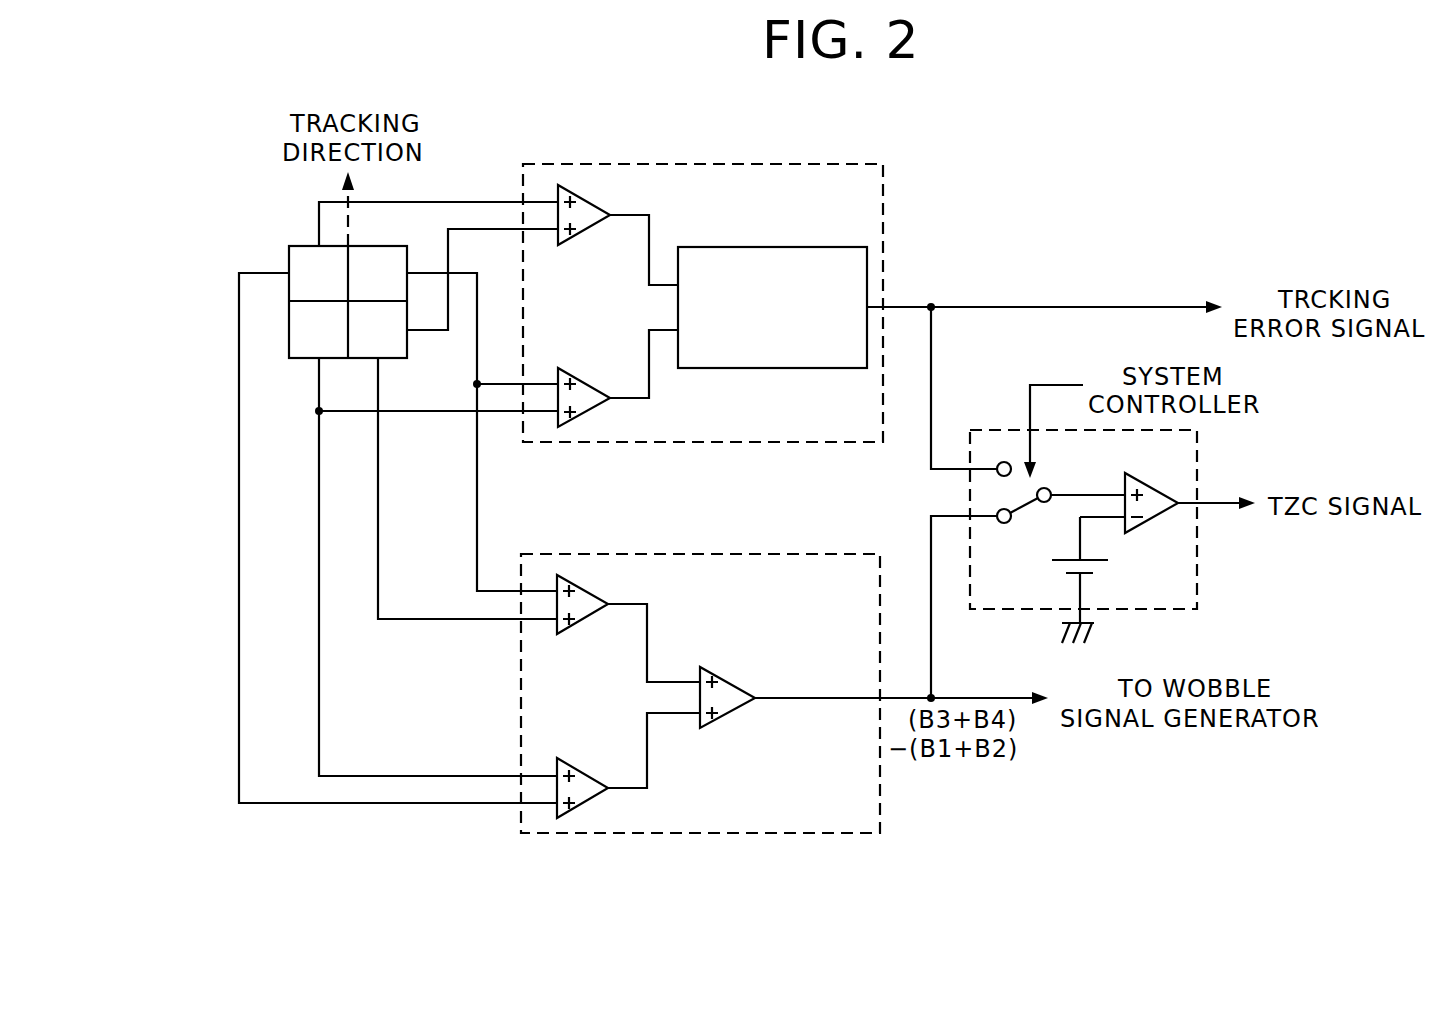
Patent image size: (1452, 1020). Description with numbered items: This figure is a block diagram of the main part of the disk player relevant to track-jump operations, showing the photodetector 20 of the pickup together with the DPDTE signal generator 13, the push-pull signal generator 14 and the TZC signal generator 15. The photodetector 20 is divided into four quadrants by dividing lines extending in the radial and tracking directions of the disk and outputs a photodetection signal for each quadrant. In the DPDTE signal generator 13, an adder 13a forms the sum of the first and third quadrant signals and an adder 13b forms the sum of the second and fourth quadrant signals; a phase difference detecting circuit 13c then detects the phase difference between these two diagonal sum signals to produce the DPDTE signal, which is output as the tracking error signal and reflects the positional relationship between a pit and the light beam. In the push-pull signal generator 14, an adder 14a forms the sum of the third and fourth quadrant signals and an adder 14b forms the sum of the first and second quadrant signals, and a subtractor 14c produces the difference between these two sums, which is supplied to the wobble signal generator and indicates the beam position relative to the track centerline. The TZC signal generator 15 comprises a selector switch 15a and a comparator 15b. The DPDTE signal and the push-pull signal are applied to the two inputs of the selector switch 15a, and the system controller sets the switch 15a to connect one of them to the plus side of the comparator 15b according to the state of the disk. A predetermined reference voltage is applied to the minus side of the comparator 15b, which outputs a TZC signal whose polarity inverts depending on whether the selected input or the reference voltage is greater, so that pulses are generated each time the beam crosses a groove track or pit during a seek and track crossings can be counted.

The photodetector 20 is at (288, 237).
The DPDTE signal generator 13 is at (883, 184).
The adder 13a is at (596, 233).
The adder 13b is at (598, 380).
The phase difference detecting circuit 13c is at (830, 247).
The push-pull signal generator 14 is at (880, 803).
The adder 14a is at (595, 622).
The adder 14b is at (598, 770).
The subtractor 14c is at (734, 688).
The TZC signal generator 15 is at (1197, 447).
The selector switch 15a is at (1034, 510).
The comparator 15b is at (1162, 492).